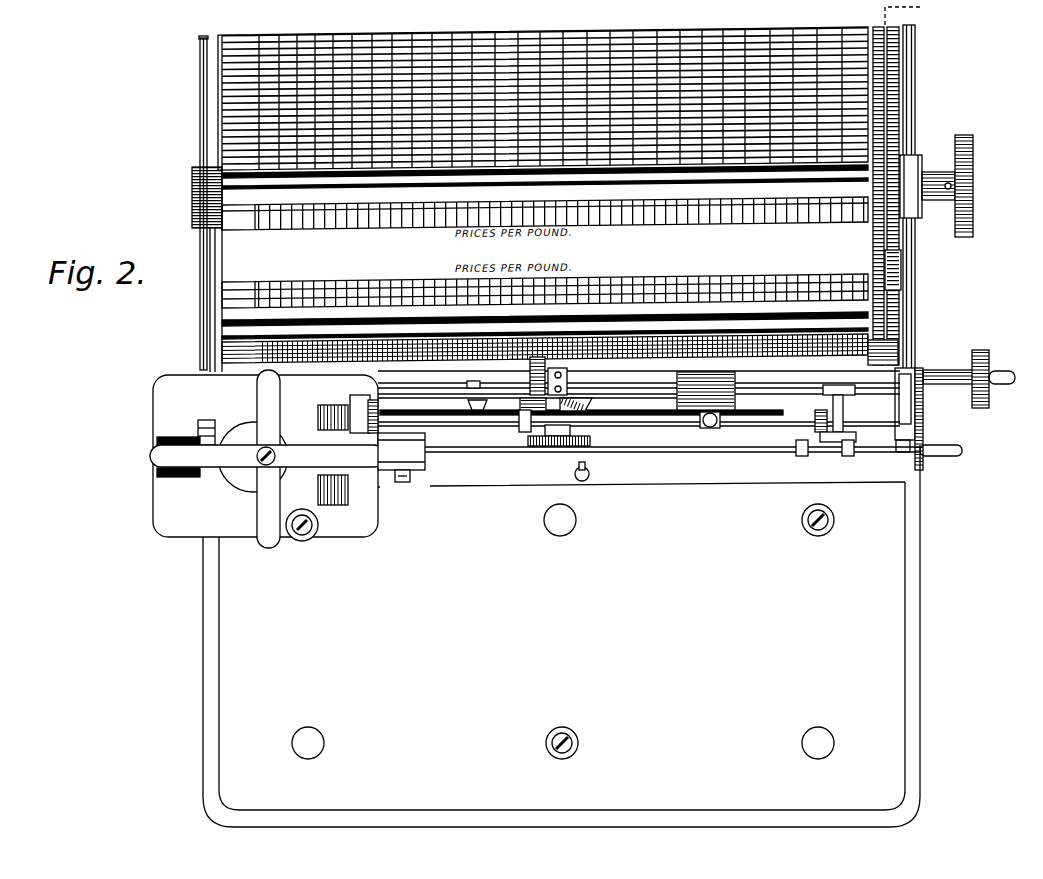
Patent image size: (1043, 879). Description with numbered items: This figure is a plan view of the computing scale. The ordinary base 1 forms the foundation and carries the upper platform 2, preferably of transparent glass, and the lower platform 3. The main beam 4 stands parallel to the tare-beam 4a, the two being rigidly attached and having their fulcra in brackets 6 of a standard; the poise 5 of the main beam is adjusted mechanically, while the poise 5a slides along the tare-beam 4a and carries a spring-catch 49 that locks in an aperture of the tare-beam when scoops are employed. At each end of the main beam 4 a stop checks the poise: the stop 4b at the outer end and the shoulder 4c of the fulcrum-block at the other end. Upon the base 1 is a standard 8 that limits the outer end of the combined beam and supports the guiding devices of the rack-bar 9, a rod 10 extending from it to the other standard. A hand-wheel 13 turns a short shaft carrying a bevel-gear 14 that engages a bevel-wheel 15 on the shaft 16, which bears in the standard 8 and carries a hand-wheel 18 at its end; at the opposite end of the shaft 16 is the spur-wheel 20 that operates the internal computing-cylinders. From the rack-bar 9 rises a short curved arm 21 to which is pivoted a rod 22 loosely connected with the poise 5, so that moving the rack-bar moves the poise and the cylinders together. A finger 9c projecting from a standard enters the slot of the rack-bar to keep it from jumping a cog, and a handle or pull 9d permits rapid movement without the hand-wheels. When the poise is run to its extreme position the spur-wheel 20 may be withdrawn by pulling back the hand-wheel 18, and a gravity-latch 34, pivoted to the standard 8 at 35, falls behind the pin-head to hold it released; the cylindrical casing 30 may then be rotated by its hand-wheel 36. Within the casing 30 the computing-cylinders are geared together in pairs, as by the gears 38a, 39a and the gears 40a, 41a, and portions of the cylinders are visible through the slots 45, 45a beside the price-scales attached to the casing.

The base 1 is at (183, 600).
The upper platform 2 is at (160, 523).
The lower platform 3 is at (561, 636).
The main beam 4 is at (765, 393).
The tare-beam 4a is at (705, 454).
The stop 4b is at (823, 386).
The shoulder 4c is at (360, 400).
The poise 5 is at (702, 392).
The poise 5a is at (425, 462).
The brackets 6 is at (318, 413).
The standard 8 is at (925, 406).
The rack-bar 9 is at (652, 415).
The finger 9c is at (560, 412).
The handle or pull 9d is at (712, 428).
The rod 10 is at (462, 445).
The hand-wheel 13 is at (540, 447).
The bevel-gear 14 is at (518, 430).
The bevel-wheel 15 is at (532, 362).
The shaft 16 is at (757, 372).
The hand-wheel 18 is at (988, 369).
The spur-wheel 20 is at (898, 352).
The curved arm 21 is at (466, 409).
The rod 22 is at (613, 402).
The cylindrical casing 30 is at (400, 42).
The gravity-latch 34 is at (945, 456).
The pivot 35 is at (905, 452).
The hand-wheel 36 is at (973, 212).
The gear 38a is at (898, 299).
The gear 39a is at (892, 127).
The rack 40a is at (886, 93).
The pawl 41a is at (893, 269).
The slot 45 is at (323, 209).
The slot 45a is at (388, 302).
The spring-catch 49 is at (402, 483).